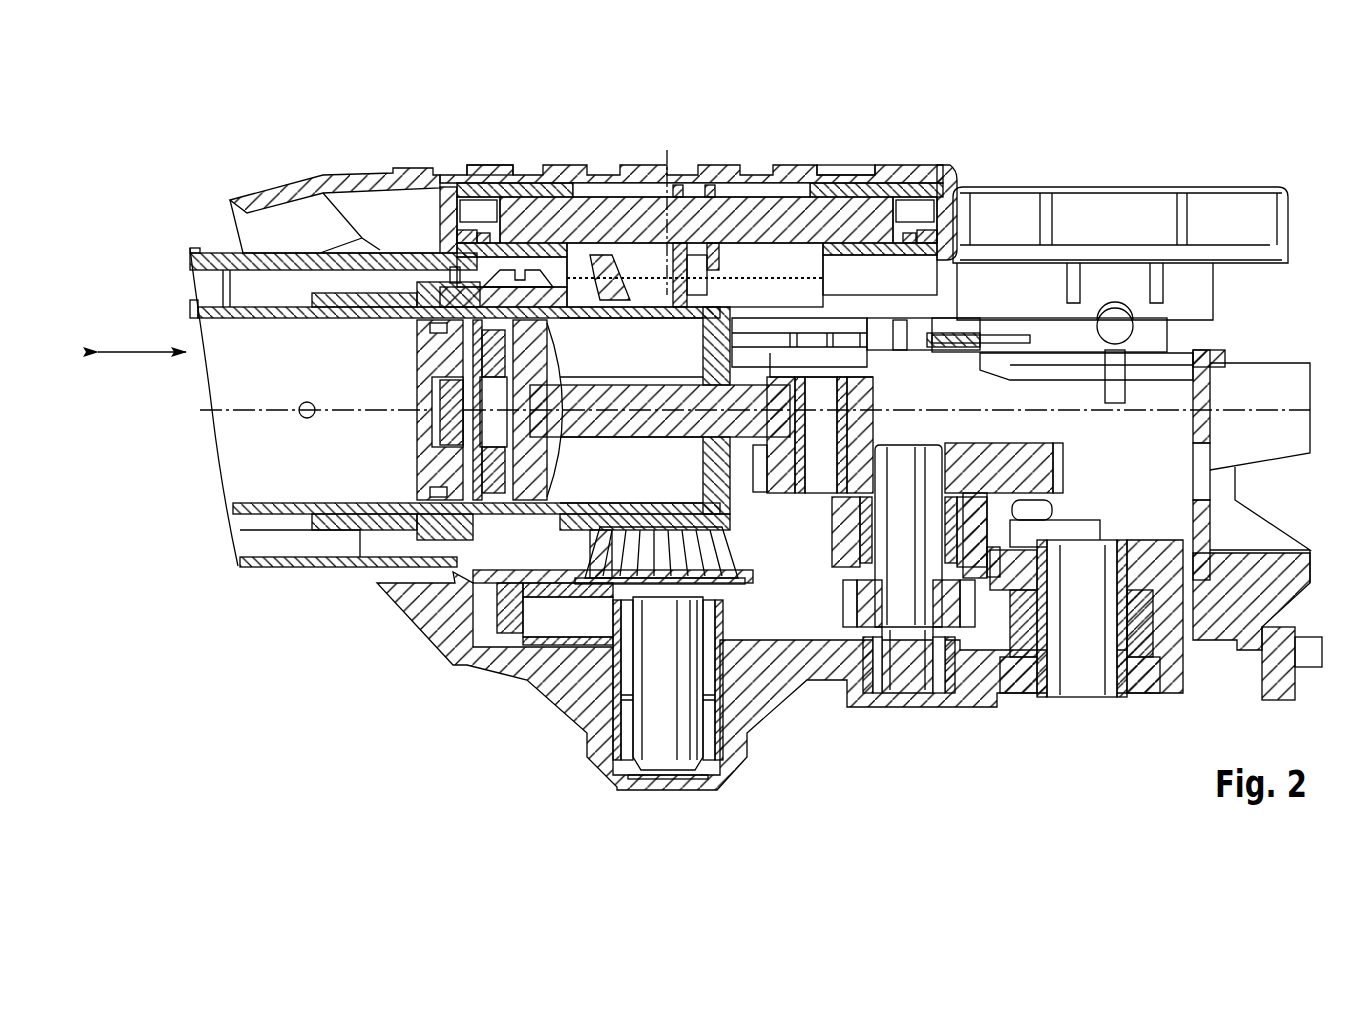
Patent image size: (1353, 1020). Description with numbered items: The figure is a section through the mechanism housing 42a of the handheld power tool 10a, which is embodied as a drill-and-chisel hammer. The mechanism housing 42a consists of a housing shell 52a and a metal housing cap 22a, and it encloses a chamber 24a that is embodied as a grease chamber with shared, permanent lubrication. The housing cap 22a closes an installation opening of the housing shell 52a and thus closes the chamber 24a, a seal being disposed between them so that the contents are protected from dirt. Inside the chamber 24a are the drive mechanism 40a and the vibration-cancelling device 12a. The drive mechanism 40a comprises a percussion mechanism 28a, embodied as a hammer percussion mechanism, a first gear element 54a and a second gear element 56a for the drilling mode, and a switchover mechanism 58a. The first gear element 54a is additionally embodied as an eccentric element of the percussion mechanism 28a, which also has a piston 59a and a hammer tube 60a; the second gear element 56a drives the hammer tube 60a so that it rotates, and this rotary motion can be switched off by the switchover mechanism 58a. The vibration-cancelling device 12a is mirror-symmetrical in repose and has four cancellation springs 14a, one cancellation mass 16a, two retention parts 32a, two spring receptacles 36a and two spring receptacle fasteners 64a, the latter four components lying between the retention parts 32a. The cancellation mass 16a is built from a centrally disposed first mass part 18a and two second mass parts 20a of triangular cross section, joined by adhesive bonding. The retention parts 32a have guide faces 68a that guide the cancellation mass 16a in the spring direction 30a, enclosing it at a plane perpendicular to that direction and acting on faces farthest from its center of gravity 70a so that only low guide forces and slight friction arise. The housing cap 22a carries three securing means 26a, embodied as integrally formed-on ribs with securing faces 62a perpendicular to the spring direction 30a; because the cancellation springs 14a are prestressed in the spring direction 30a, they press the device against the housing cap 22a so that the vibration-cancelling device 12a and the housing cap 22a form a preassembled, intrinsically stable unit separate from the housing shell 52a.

The handheld power tool 10a is at (213, 120).
The vibration-cancelling device 12a is at (440, 140).
The cancellation springs 14a is at (485, 232).
The cancellation mass 16a is at (612, 190).
The first mass part 18a is at (636, 205).
The second mass parts 20a is at (793, 265).
The housing cap 22a is at (575, 170).
The chamber 24a is at (750, 278).
The securing means 26a is at (447, 193).
The percussion mechanism 28a is at (192, 450).
The spring direction 30a is at (141, 356).
The retention parts 32a is at (528, 183).
The spring receptacles 36a is at (702, 280).
The drive mechanism 40a is at (740, 641).
The mechanism housing 42a is at (388, 645).
The housing shell 52a is at (420, 615).
The first gear element 54a is at (1060, 470).
The second gear element 56a is at (705, 550).
The switchover mechanism 58a is at (1192, 140).
The piston 59a is at (377, 376).
The hammer tube 60a is at (200, 312).
The securing faces 62a is at (468, 205).
The spring receptacle fasteners 64a is at (712, 243).
The guide faces 68a is at (460, 236).
The center of gravity 70a is at (671, 183).